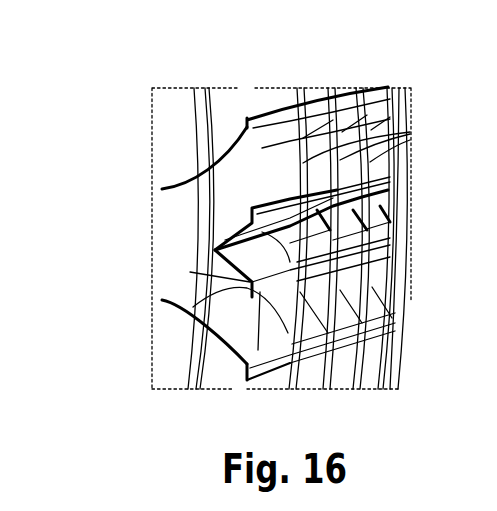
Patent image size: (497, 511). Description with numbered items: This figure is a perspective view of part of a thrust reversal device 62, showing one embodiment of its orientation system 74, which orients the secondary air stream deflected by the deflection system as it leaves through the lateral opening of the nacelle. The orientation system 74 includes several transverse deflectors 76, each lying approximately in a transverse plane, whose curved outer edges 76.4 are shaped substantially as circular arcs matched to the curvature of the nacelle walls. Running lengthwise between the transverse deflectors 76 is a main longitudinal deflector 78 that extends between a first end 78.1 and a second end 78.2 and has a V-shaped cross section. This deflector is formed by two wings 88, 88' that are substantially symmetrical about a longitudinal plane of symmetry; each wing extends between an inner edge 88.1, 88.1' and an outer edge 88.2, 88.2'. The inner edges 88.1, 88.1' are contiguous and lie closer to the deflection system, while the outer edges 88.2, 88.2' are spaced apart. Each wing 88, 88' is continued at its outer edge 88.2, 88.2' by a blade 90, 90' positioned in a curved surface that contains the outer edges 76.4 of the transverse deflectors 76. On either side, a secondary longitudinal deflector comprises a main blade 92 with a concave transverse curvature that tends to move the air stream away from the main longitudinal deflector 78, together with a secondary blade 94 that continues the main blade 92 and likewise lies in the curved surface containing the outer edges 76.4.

The thrust reversal device 62 is at (145, 363).
The orientation system 74 is at (219, 382).
The transverse deflector 76 is at (364, 76).
The outer edge 76.4 is at (410, 140).
The main longitudinal deflector 78 is at (412, 223).
The first end 78.1 is at (214, 247).
The second end 78.2 is at (397, 203).
The wing 88 is at (248, 237).
The wing 88' is at (196, 304).
The inner edge 88.1 is at (166, 253).
The inner edge 88.1' is at (151, 310).
The outer edge 88.2 is at (154, 158).
The outer edge 88.2' is at (158, 332).
The blade 90 is at (313, 129).
The blade 90' is at (315, 382).
The main blade 92 is at (215, 210).
The secondary blade 94 is at (270, 145).